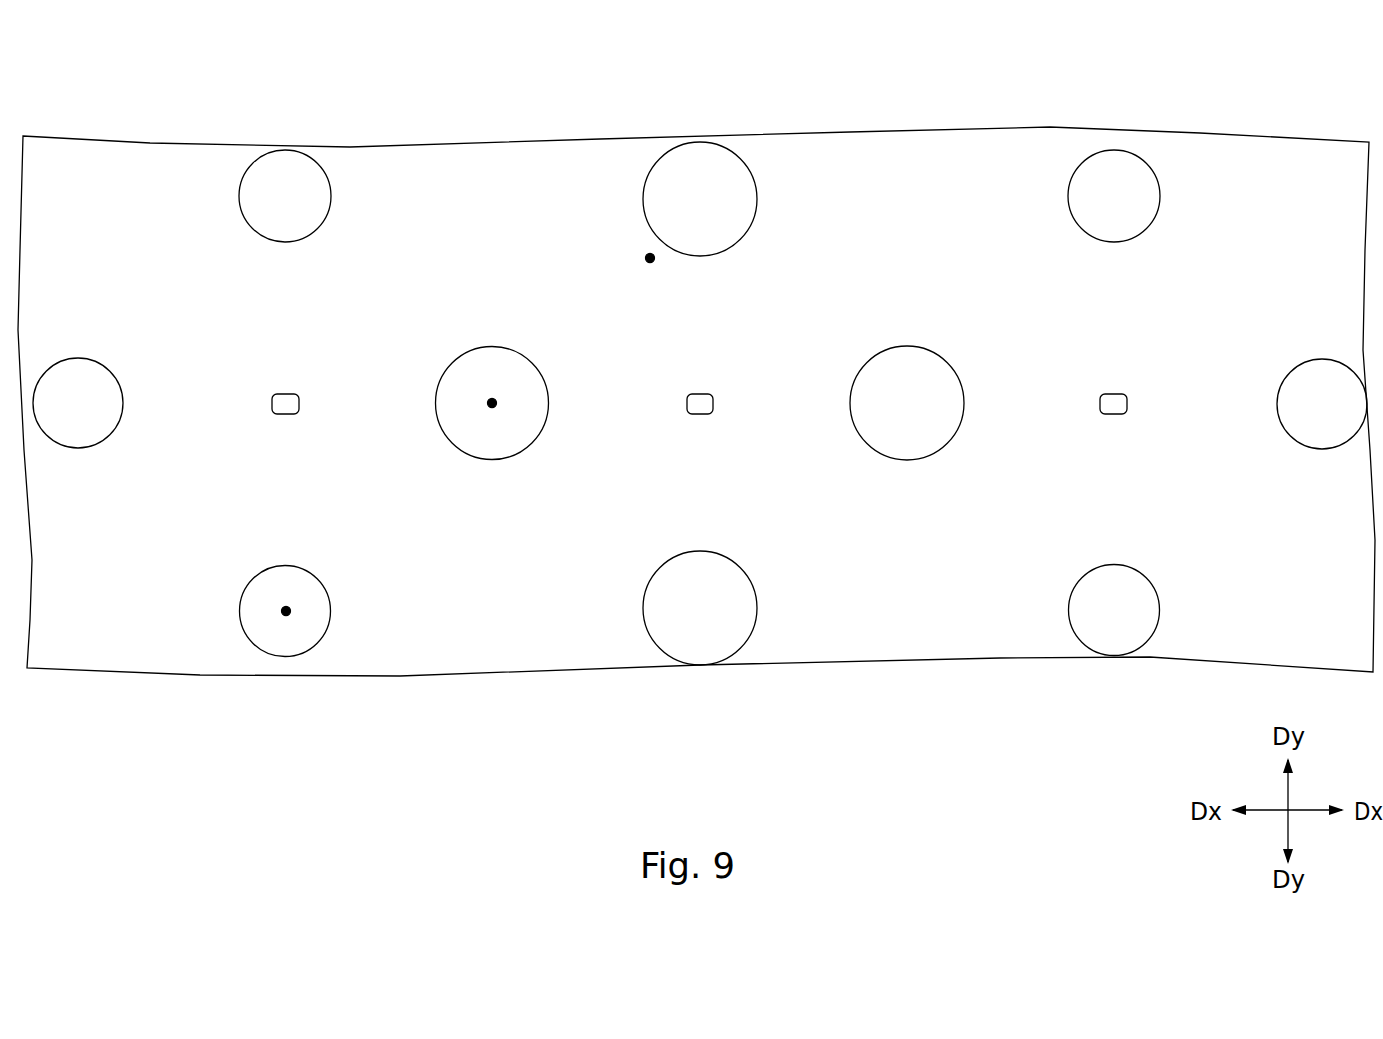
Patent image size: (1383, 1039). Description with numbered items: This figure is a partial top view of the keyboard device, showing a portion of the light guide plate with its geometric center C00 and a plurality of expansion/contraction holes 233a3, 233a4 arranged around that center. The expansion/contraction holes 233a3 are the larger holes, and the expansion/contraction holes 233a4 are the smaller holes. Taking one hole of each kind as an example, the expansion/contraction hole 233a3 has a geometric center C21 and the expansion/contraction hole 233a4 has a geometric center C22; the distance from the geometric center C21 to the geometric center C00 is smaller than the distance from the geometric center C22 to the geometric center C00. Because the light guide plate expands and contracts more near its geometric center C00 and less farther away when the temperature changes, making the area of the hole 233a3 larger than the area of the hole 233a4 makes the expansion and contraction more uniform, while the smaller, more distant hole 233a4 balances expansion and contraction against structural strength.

The expansion/contraction hole 233a3 is at (492, 347).
The expansion/contraction hole 233a4 is at (78, 352).
The geometric center of the light guide plate C00 is at (650, 258).
The geometric center of the expansion/contraction hole 233a3 C21 is at (492, 405).
The geometric center of the expansion/contraction hole 233a4 C22 is at (286, 613).